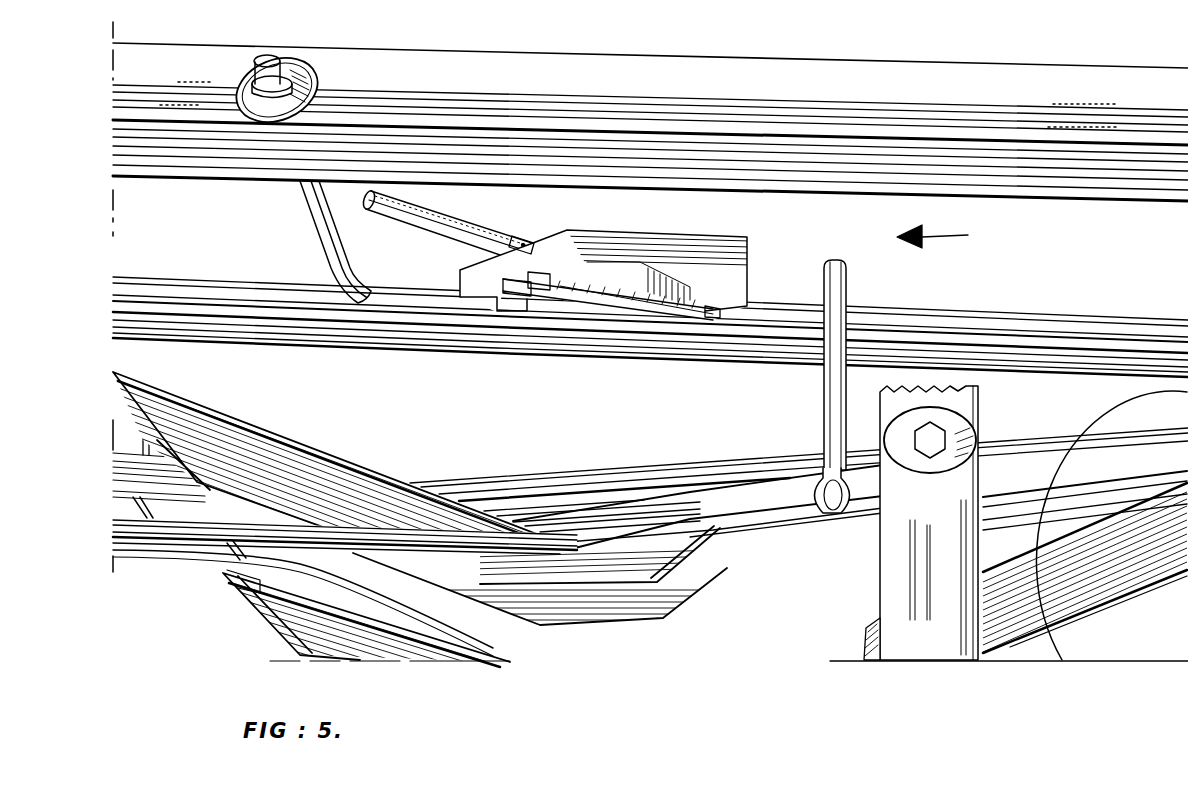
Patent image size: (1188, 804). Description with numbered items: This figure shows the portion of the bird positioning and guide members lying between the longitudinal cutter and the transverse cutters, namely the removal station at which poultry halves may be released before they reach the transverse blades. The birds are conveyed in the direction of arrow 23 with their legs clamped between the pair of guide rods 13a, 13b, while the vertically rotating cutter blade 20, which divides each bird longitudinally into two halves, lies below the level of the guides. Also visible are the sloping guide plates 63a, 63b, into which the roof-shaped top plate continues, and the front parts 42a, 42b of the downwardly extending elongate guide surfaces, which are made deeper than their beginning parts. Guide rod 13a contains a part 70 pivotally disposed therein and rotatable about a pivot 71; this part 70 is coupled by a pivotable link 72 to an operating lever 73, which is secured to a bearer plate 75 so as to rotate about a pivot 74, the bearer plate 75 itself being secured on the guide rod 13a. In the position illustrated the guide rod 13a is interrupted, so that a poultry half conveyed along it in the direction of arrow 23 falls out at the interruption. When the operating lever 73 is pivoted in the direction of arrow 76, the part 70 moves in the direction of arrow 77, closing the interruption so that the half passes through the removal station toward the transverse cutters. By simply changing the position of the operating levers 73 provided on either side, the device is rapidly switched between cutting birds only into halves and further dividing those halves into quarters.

The guide rod 13a is at (967, 318).
The guide rod 13b is at (1010, 355).
The cutter blade 20 is at (1140, 420).
The arrow indicating direction of movement 23 is at (950, 236).
The front part of elongate guide surface 42a is at (643, 603).
The front part of elongate guide surface 42b is at (567, 577).
The sloping guide plate 63a is at (330, 470).
The sloping guide plate 63b is at (300, 627).
The pivotable guide part 70 is at (620, 300).
The pivot 71 is at (713, 318).
The pivotable link 72 is at (570, 300).
The operating lever 73 is at (433, 213).
The pivot 74 is at (522, 242).
The bearer plate 75 is at (747, 258).
The arrow indicating lever pivoting direction 76 is at (351, 222).
The arrow indicating movement of part 70 77 is at (518, 292).